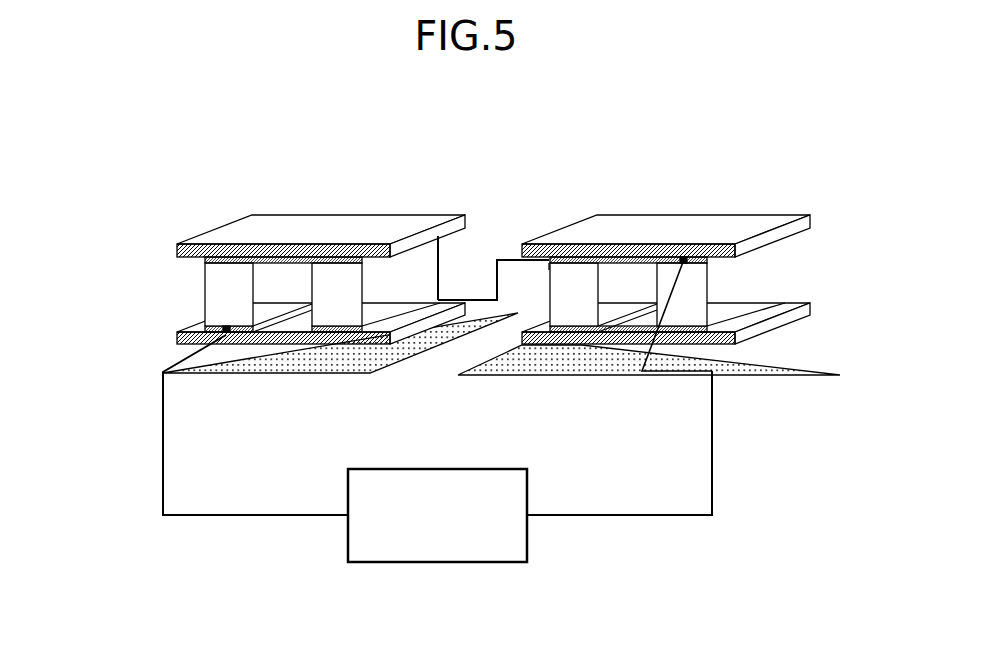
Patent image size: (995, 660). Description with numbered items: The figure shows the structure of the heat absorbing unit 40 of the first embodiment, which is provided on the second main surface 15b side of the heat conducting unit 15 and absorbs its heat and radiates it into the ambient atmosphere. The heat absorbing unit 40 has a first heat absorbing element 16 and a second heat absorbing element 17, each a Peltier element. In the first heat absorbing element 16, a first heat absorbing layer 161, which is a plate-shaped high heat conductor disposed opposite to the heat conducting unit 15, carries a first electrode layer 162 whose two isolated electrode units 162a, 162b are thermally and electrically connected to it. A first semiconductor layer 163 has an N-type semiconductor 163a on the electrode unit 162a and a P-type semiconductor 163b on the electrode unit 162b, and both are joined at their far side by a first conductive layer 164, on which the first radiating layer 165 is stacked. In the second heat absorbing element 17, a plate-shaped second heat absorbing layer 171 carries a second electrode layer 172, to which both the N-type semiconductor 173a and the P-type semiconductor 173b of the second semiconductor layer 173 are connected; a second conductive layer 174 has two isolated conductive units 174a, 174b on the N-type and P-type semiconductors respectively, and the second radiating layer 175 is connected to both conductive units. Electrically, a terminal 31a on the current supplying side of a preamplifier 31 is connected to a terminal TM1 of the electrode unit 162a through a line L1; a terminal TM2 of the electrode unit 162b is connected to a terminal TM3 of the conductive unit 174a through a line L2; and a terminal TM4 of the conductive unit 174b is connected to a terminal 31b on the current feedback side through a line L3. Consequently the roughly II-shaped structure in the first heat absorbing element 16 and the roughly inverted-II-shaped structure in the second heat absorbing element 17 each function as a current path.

The heat absorbing unit 40 is at (333, 128).
The heat conducting unit 15 is at (276, 435).
The second main surface 15b is at (268, 364).
The first heat absorbing element 16 is at (349, 188).
The first heat absorbing layer 161 is at (177, 333).
The first electrode layer 162 is at (106, 297).
The electrode unit 162a is at (207, 327).
The electrode unit 162b is at (330, 345).
The first semiconductor layer 163 is at (106, 274).
The N-type semiconductor 163a is at (215, 297).
The P-type semiconductor 163b is at (337, 298).
The first conductive layer 164 is at (222, 253).
The first radiating layer 165 is at (367, 244).
The terminal TM1 is at (227, 343).
The terminal TM2 is at (446, 287).
The second heat absorbing element 17 is at (683, 188).
The second heat absorbing layer 171 is at (737, 342).
The second electrode layer 172 is at (672, 345).
The second semiconductor layer 173 is at (843, 316).
The N-type semiconductor 173a is at (574, 309).
The P-type semiconductor 173b is at (693, 298).
The second conductive layer 174 is at (777, 275).
The conductive unit 174a is at (572, 245).
The conductive unit 174b is at (692, 267).
The second radiating layer 175 is at (698, 246).
The terminal TM3 is at (543, 268).
The terminal TM4 is at (670, 267).
The line L1 is at (227, 504).
The line L2 is at (480, 291).
The line L3 is at (722, 450).
The preamplifier 31 is at (444, 468).
The terminal 31a is at (342, 523).
The terminal 31b is at (535, 523).